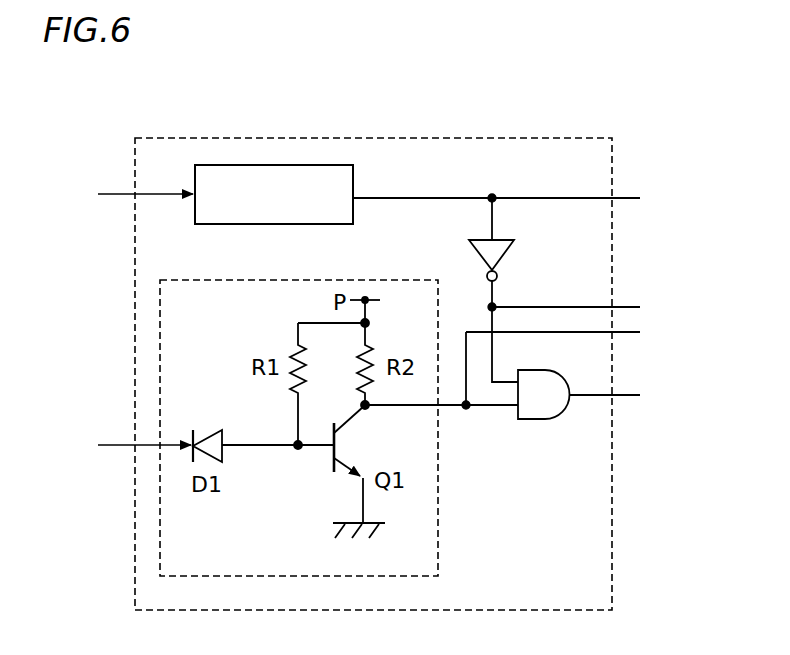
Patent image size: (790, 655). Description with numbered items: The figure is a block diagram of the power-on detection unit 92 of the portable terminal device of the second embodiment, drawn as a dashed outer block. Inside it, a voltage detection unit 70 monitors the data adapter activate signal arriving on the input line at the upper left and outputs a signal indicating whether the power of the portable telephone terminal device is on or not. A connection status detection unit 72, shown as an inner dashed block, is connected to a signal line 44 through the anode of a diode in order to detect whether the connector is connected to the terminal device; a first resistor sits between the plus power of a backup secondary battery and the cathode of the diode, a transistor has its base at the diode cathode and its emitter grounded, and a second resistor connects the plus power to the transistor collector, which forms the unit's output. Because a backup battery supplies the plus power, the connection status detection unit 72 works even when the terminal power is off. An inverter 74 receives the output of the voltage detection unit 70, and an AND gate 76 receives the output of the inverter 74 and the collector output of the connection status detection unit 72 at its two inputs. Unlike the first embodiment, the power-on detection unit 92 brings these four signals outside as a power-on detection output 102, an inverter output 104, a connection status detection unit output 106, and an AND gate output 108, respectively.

The signal line 44 is at (118, 443).
The voltage detection unit 70 is at (300, 224).
The connection status detection unit 72 is at (410, 280).
The inverter 74 is at (500, 240).
The AND gate 76 is at (532, 420).
The power-on detection unit 92 is at (613, 240).
The power-on detection output 102 is at (627, 198).
The inverter output 104 is at (627, 307).
The connection status detection unit output 106 is at (627, 332).
The AND gate output 108 is at (627, 395).